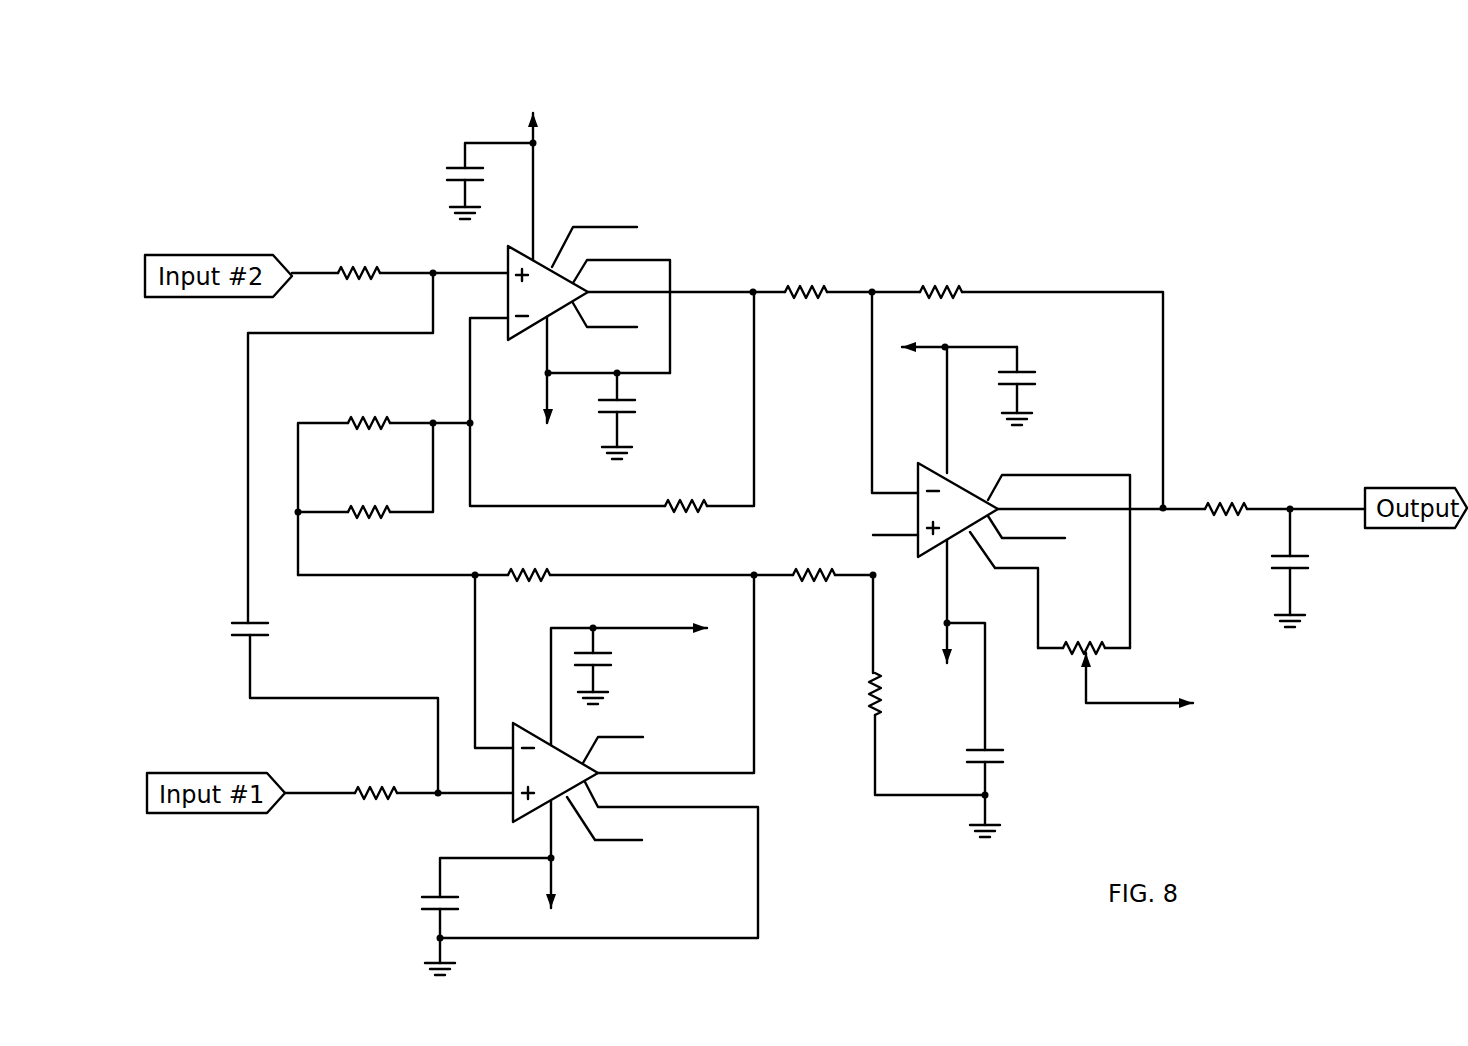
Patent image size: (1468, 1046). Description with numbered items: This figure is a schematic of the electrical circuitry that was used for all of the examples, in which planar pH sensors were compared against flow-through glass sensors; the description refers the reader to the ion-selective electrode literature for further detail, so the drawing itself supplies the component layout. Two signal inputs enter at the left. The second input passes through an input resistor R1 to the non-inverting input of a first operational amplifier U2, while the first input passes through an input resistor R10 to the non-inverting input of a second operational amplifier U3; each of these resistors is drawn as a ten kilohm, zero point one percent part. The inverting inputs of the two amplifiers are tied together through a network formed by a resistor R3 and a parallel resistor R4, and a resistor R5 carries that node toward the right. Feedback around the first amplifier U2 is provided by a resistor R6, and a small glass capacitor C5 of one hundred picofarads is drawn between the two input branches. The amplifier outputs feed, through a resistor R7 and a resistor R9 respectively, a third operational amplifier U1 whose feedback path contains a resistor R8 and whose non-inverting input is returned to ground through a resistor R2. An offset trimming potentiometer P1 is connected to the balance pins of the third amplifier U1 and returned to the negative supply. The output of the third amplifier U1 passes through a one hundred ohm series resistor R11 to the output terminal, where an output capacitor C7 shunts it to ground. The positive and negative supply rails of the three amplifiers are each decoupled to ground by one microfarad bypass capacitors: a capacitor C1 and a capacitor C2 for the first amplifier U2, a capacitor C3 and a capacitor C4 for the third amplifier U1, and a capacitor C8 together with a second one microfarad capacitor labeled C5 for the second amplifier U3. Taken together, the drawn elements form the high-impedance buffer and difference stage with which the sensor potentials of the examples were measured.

The input resistor R1 10K 0.1% R1 is at (366, 261).
The resistor R2 10K 0.1% R2 is at (899, 685).
The resistor R3 10K 0.1% R3 is at (380, 412).
The resistor R4 10K 0.1% R4 is at (367, 512).
The resistor R5 10K 0.1% R5 is at (533, 563).
The feedback resistor R6 10K 0.1% R6 is at (688, 506).
The resistor R7 10K 0.1% R7 is at (804, 277).
The feedback resistor R8 10K 0.1% R8 is at (946, 277).
The resistor R9 10K 0.1% R9 is at (818, 560).
The input resistor R10 10K 0.1% R10 is at (384, 782).
The output resistor R11 100 ohm R11 is at (1226, 480).
The bypass capacitor C1 1.0 uF C1 is at (451, 175).
The bypass capacitor C2 1.0 uF C2 is at (630, 415).
The bypass capacitor C3 1.0 uF C3 is at (1056, 379).
The bypass capacitor C4 1.0 uF C4 is at (1011, 730).
The capacitor C5 (100 pF glass / 1.0 uF bypass) C5 is at (348, 787).
The output capacitor C7 1.0 uF C7 is at (1327, 568).
The bypass capacitor C8 1.0 uF C8 is at (632, 666).
The operational amplifier U1 AD545KH U1 is at (1009, 498).
The operational amplifier U2 AD549KH U2 is at (581, 287).
The operational amplifier U3 AD549KH U3 is at (599, 756).
The offset trim potentiometer P1 10K P1 is at (1138, 651).